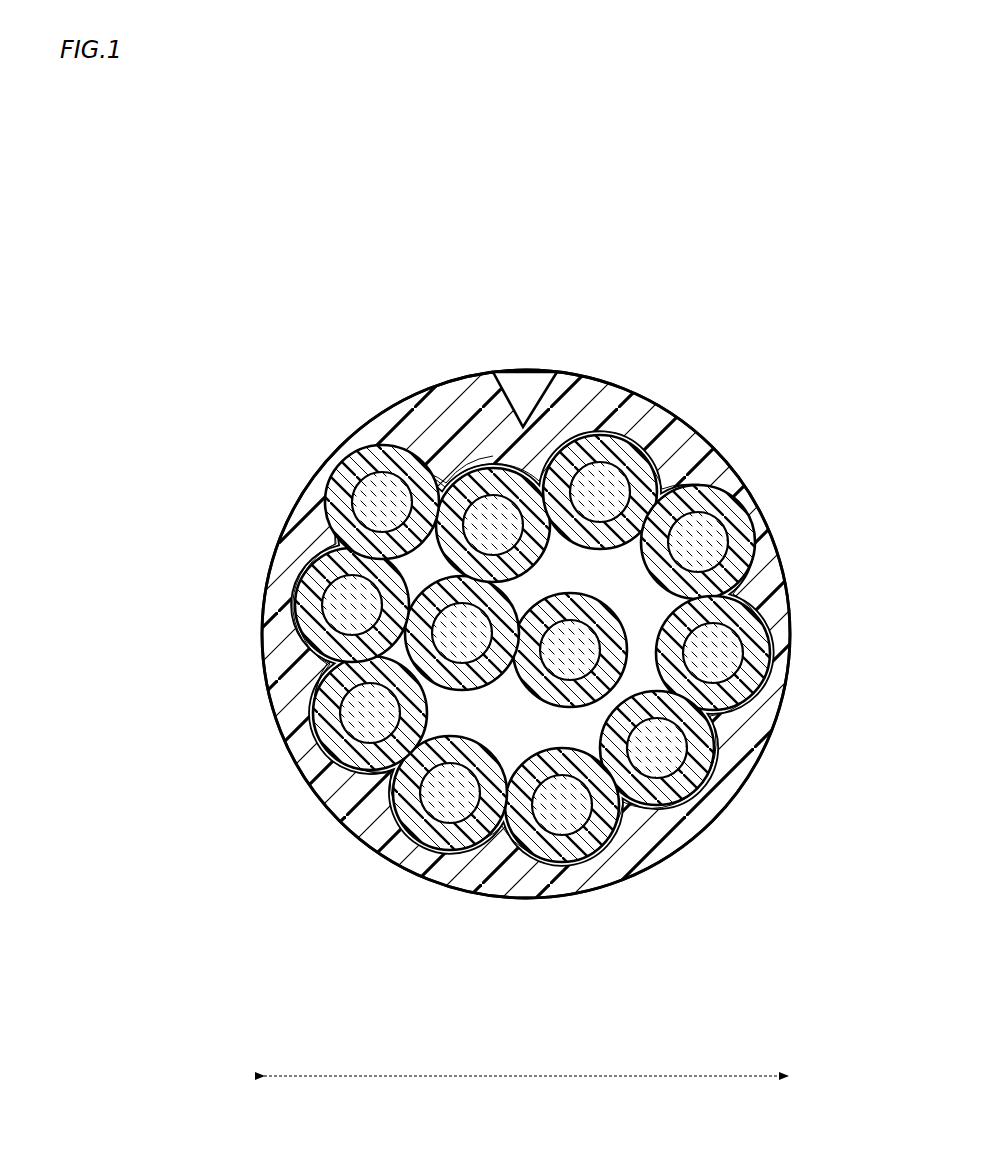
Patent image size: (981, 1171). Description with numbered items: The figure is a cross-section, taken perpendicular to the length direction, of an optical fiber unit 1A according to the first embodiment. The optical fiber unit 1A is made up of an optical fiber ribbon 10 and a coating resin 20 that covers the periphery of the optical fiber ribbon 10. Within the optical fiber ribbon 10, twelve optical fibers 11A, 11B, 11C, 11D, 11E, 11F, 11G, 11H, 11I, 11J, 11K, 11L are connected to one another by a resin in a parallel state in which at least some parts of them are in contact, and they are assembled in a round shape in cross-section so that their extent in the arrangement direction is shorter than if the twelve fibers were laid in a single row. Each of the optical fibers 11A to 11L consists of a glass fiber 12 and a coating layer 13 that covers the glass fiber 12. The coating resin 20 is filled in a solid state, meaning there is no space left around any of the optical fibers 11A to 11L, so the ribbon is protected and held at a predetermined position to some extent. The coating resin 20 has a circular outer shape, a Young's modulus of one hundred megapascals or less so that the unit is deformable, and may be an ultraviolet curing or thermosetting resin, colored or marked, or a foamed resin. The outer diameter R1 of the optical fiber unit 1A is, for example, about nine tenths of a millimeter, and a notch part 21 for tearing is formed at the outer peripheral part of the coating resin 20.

The optical fiber unit 1A is at (664, 194).
The optical fiber ribbon 10 is at (667, 448).
The optical fiber 11A is at (583, 612).
The optical fiber 11B is at (458, 697).
The optical fiber 11C is at (437, 507).
The optical fiber 11D is at (590, 453).
The optical fiber 11E is at (745, 483).
The optical fiber 11F is at (772, 656).
The optical fiber 11G is at (715, 765).
The optical fiber 11H is at (580, 858).
The optical fiber 11I is at (403, 845).
The optical fiber 11J is at (325, 718).
The optical fiber 11K is at (300, 590).
The optical fiber 11L is at (325, 480).
The glass fiber 12 is at (766, 672).
The coating layer 13 is at (768, 708).
The coating resin 20 is at (398, 396).
The notch part 21 is at (542, 393).
The outer diameter R1 is at (526, 1091).